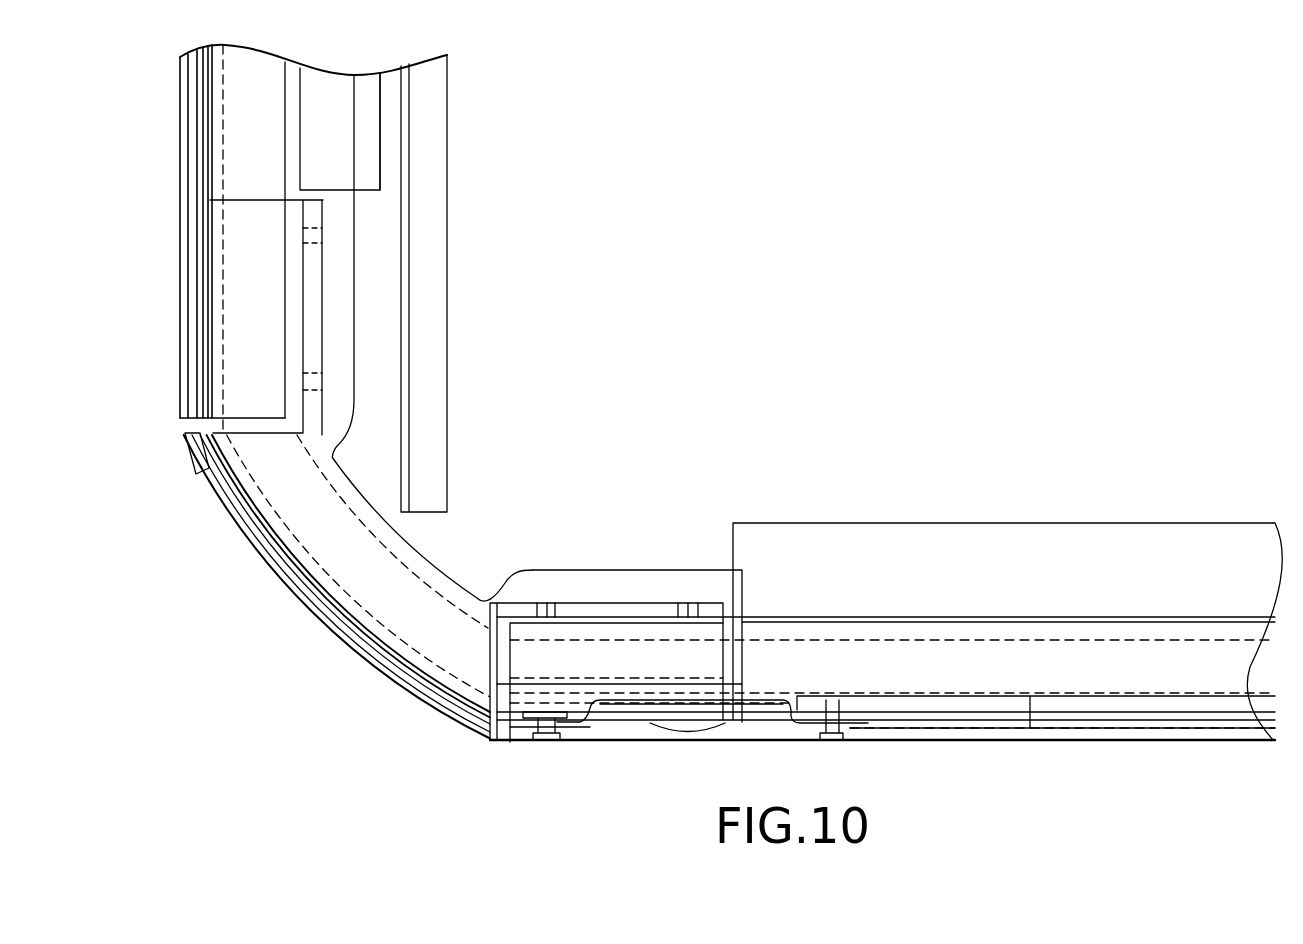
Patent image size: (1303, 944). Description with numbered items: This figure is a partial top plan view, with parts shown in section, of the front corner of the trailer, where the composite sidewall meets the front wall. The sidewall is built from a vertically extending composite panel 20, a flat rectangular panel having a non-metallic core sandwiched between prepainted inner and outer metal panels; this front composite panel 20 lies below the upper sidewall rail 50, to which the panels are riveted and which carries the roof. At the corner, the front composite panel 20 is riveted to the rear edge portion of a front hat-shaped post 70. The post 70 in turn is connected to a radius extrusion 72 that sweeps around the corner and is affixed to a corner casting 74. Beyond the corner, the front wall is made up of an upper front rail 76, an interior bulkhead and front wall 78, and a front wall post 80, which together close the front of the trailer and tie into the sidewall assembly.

The composite panel 20 is at (937, 695).
The upper rail 50 is at (892, 557).
The front hat-shaped post 70 is at (683, 697).
The radius extrusion 72 is at (313, 583).
The corner casting 74 is at (323, 357).
The upper front rail 76 is at (335, 100).
The interior bulkhead and front wall 78 is at (420, 140).
The front wall post 80 is at (390, 215).